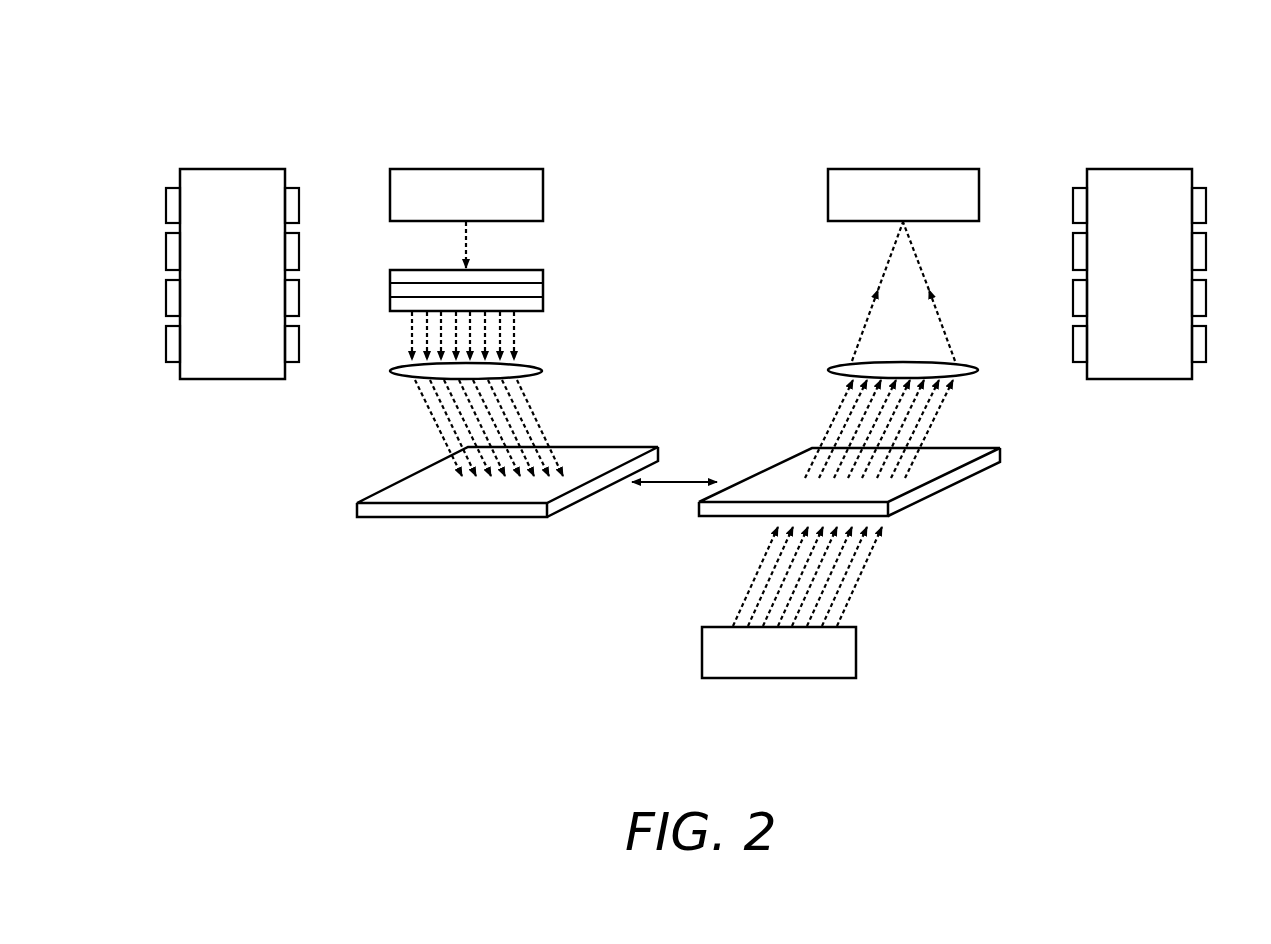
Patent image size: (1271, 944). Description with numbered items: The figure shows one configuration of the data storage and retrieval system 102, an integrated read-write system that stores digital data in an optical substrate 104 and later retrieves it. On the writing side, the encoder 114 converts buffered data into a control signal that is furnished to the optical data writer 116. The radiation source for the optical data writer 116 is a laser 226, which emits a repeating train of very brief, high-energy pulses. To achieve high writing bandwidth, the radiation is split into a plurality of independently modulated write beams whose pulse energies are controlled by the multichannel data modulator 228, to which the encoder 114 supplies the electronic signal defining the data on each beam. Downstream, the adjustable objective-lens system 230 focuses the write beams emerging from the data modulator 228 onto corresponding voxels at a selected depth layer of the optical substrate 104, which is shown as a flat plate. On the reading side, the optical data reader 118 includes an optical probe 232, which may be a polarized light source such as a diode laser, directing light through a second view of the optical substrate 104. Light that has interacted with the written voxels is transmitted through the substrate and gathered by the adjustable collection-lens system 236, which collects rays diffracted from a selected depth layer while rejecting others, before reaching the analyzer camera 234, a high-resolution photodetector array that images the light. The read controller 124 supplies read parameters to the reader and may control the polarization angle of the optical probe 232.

The data storage and retrieval system 102 is at (284, 643).
The optical substrate 104 is at (849, 482).
The encoder 114 is at (232, 274).
The optical data writer 116 is at (600, 106).
The optical data reader 118 is at (760, 184).
The read controller 124 is at (1139, 274).
The laser 226 is at (466, 195).
The multichannel data modulator 228 is at (543, 302).
The adjustable objective-lens system 230 is at (543, 372).
The optical probe 232 is at (779, 652).
The analyzer camera 234 is at (903, 195).
The adjustable collection-lens system 236 is at (830, 368).